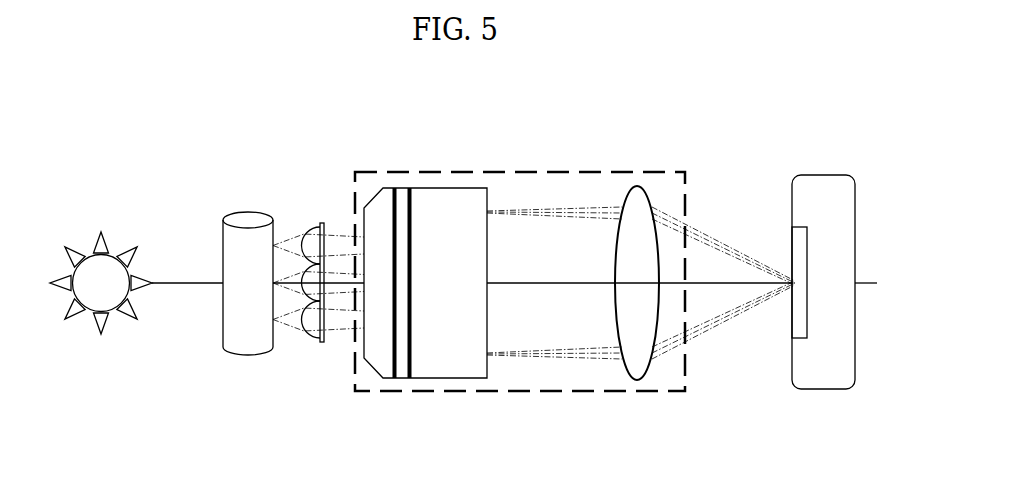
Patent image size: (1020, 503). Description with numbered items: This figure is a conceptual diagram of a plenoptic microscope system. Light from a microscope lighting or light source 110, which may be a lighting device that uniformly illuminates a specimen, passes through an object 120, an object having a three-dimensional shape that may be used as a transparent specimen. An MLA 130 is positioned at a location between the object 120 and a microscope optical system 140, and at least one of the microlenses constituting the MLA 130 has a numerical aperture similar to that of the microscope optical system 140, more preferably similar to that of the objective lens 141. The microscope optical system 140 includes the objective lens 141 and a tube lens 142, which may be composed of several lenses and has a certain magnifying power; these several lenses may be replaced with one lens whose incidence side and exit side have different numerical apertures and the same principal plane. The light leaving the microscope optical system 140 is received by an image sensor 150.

The microscope lighting (light source) 110 is at (87, 313).
The object 120 is at (248, 353).
The MLA 130 is at (320, 342).
The microscope optical system 140 is at (508, 172).
The objective lens 141 is at (442, 378).
The tube lens 142 is at (637, 380).
The image sensor 150 is at (822, 390).